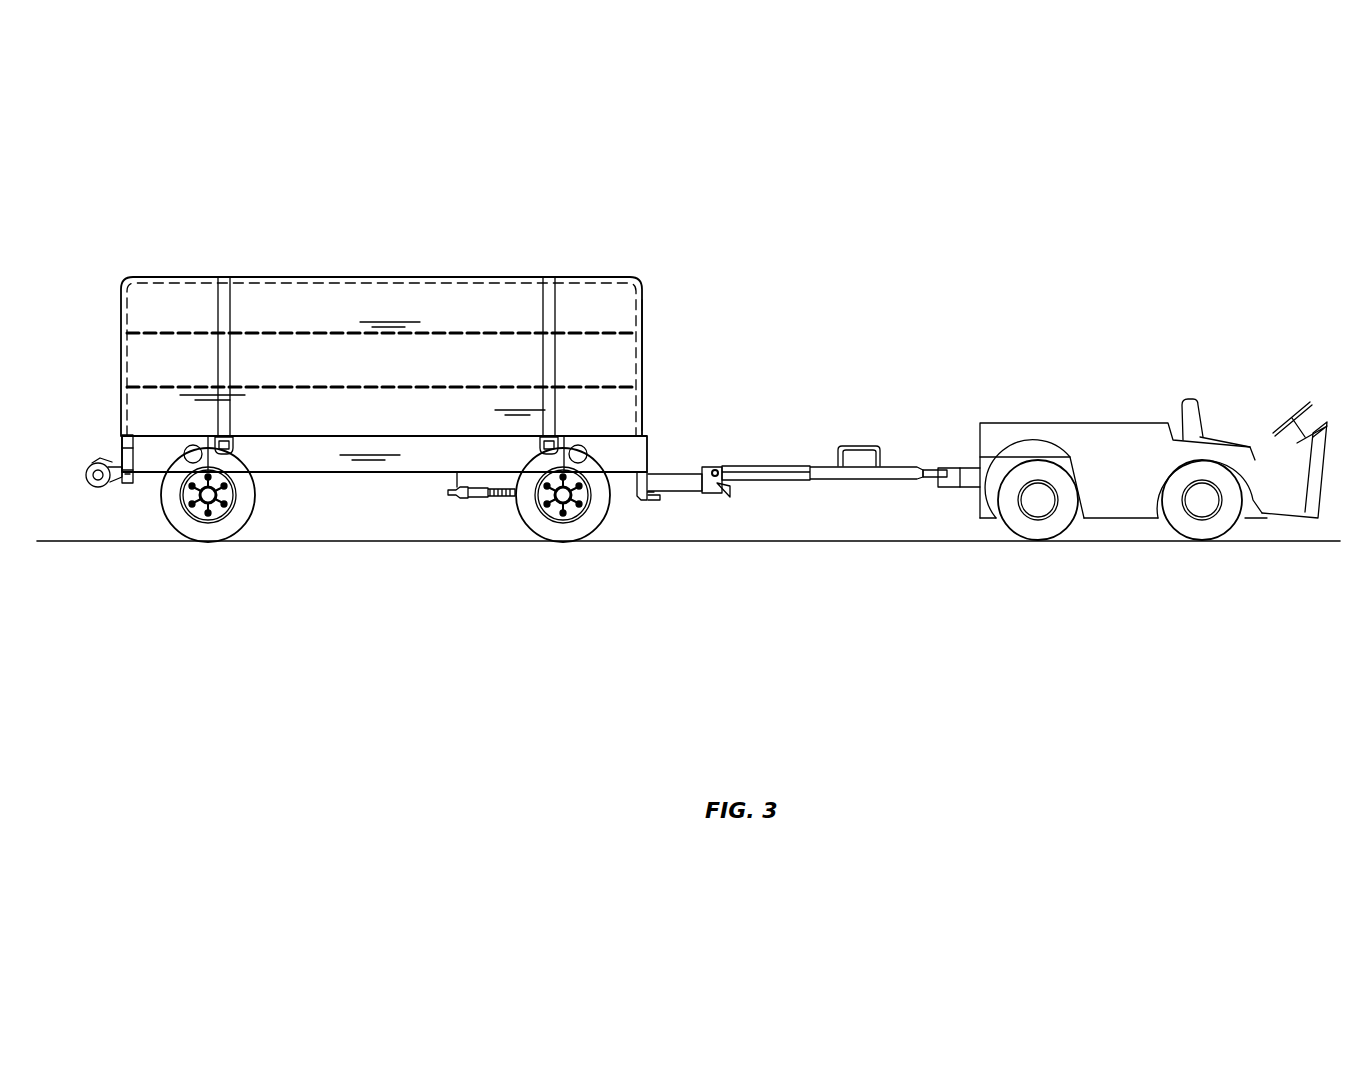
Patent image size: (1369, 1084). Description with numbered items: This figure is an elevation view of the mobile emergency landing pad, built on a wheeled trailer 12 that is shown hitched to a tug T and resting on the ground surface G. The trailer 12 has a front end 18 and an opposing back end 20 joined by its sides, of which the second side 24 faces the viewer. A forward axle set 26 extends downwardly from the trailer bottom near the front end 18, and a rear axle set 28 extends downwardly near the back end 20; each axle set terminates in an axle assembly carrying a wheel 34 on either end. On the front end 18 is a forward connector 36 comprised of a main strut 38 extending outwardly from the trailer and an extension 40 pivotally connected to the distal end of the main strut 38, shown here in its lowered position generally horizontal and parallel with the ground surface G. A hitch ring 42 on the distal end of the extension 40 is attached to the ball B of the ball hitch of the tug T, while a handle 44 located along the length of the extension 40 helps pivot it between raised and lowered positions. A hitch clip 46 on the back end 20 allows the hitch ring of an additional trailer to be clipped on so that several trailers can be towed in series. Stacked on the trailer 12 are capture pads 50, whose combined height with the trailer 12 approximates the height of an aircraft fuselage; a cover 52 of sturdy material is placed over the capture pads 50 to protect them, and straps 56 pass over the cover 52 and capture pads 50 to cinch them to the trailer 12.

The wheeled trailer 12 is at (148, 483).
The front end 18 is at (643, 450).
The back end 20 is at (120, 440).
The second side 24 is at (355, 472).
The forward axle set 26 is at (563, 520).
The rear axle set 28 is at (208, 533).
The wheel 34 is at (255, 532).
The forward connector 36 is at (804, 480).
The main strut 38 is at (688, 492).
The extension 40 is at (770, 466).
The hitch ring 42 is at (928, 470).
The handle 44 is at (848, 447).
The hitch clip 46 is at (88, 480).
The capture pad 50 is at (613, 308).
The cover 52 is at (583, 277).
The strap 56 is at (224, 277).
The ball B is at (942, 468).
The tug T is at (1108, 430).
The ground surface G is at (1040, 595).